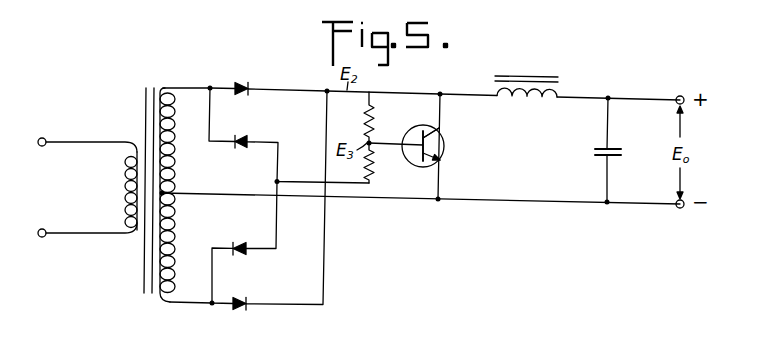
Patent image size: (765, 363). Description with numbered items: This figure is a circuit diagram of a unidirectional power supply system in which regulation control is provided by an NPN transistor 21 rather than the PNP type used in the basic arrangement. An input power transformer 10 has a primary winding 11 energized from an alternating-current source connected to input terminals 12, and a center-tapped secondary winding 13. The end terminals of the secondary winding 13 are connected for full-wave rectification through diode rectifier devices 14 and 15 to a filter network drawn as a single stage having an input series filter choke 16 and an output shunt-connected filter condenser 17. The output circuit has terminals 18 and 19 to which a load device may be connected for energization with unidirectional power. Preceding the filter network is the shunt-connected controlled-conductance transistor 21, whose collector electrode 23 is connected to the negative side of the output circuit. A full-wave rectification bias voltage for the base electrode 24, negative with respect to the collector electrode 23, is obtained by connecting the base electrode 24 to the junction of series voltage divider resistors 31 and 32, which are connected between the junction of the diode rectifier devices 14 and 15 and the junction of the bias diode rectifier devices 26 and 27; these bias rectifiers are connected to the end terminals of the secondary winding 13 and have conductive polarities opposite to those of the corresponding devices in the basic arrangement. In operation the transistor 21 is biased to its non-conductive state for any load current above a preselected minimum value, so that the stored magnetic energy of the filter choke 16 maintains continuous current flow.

The input power transformer 10 is at (153, 84).
The primary winding 11 is at (125, 188).
The input terminals 12 is at (40, 146).
The center-tapped secondary winding 13 is at (178, 95).
The diode rectifier device 14 is at (238, 84).
The diode rectifier device 15 is at (238, 306).
The input series filter choke 16 is at (518, 102).
The filter condenser 17 is at (595, 151).
The output terminal 18 is at (679, 95).
The output terminal 19 is at (676, 208).
The transistor 21 is at (444, 154).
The collector electrode 23 is at (441, 134).
The base electrode 24 is at (410, 166).
The bias diode rectifier device 26 is at (239, 150).
The bias diode rectifier device 27 is at (241, 244).
The voltage divider resistor 31 is at (374, 108).
The voltage divider resistor 32 is at (373, 172).